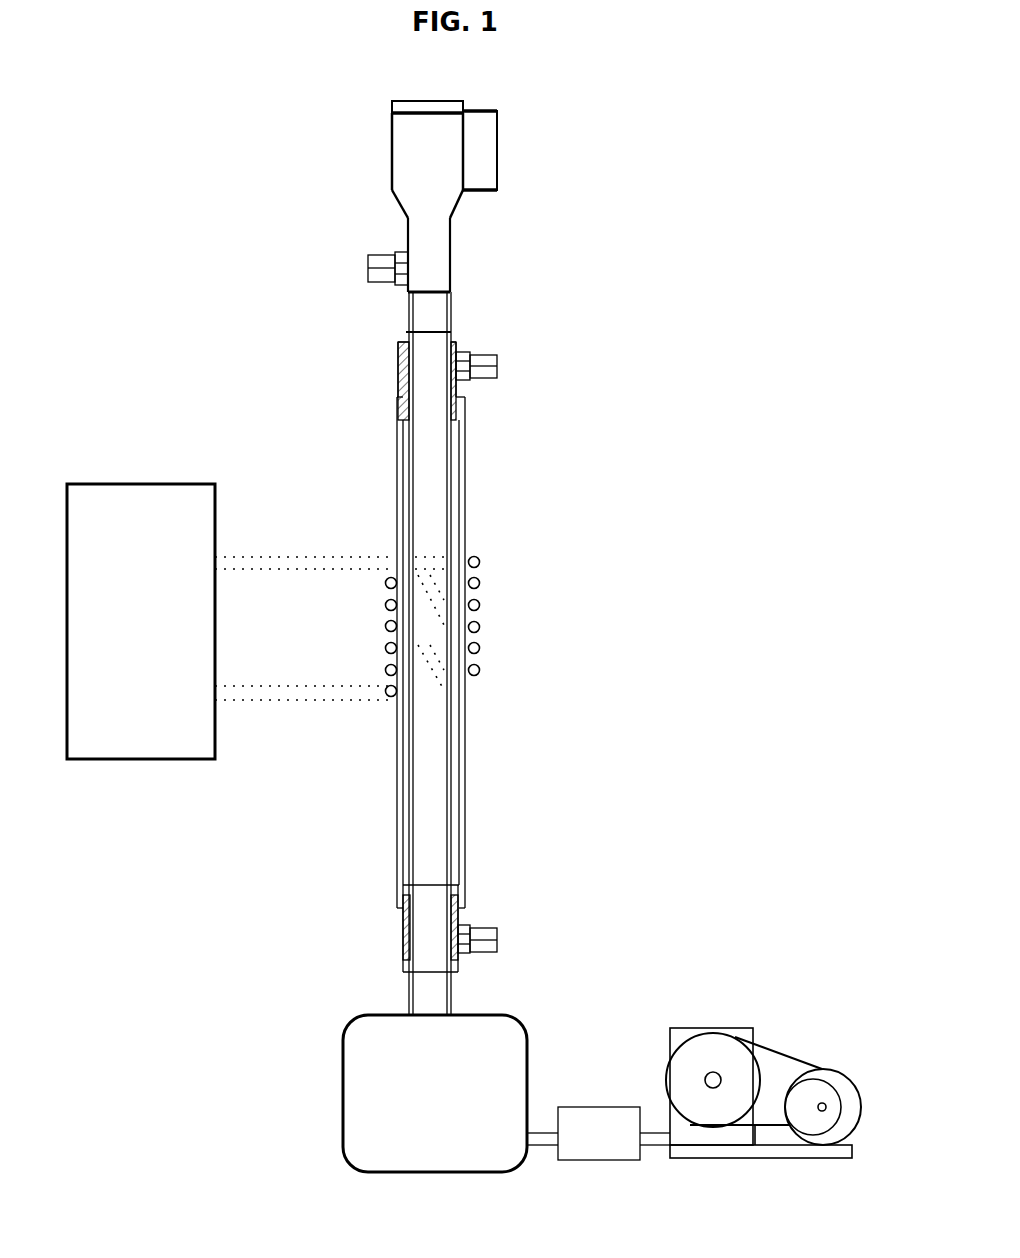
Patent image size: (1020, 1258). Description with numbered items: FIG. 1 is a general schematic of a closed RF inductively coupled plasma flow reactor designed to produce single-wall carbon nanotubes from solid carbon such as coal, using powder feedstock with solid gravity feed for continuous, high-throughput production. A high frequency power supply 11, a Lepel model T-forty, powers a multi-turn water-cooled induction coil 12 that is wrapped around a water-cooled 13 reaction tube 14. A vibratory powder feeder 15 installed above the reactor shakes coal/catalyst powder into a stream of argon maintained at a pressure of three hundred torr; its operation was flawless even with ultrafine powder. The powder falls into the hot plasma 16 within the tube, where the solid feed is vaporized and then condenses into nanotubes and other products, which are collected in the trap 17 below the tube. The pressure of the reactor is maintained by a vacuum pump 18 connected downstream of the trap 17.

The high frequency power supply 11 is at (257, 621).
The induction coil 12 is at (375, 715).
The water cooling 13 is at (462, 527).
The reaction tube 14 is at (444, 423).
The vibratory powder feeder 15 is at (436, 196).
The plasma 16 is at (428, 599).
The trap 17 is at (506, 1093).
The vacuum pump 18 is at (830, 1068).